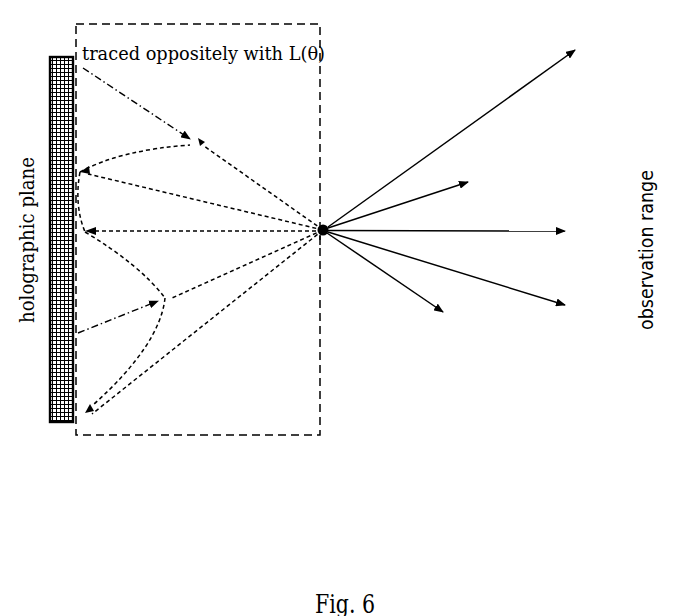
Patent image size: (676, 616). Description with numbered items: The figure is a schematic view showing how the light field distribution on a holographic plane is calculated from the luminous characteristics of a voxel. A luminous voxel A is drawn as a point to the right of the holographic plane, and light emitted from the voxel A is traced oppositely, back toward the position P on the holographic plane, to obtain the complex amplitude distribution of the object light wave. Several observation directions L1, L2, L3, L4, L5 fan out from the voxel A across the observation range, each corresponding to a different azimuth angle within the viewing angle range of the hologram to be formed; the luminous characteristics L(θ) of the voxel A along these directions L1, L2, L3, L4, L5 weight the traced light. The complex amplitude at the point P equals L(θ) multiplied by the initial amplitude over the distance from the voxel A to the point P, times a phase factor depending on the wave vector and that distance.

The voxel A is at (320, 248).
The position on the holographic plane P is at (204, 221).
The observation direction L1 is at (479, 123).
The observation direction L2 is at (418, 195).
The observation direction L3 is at (468, 234).
The observation direction L4 is at (466, 281).
The observation direction L5 is at (399, 293).